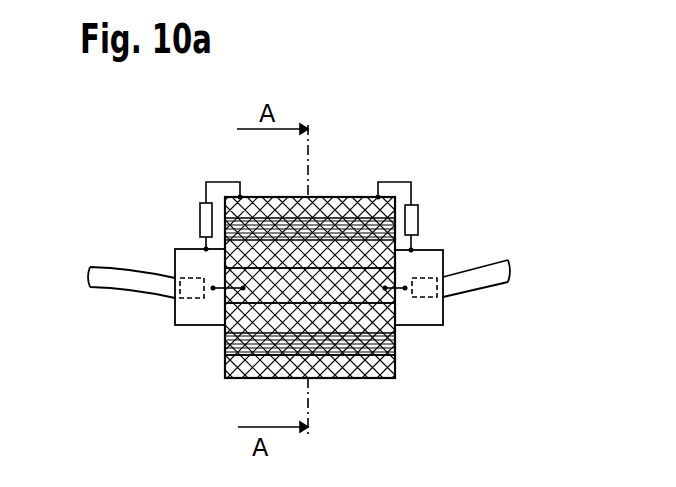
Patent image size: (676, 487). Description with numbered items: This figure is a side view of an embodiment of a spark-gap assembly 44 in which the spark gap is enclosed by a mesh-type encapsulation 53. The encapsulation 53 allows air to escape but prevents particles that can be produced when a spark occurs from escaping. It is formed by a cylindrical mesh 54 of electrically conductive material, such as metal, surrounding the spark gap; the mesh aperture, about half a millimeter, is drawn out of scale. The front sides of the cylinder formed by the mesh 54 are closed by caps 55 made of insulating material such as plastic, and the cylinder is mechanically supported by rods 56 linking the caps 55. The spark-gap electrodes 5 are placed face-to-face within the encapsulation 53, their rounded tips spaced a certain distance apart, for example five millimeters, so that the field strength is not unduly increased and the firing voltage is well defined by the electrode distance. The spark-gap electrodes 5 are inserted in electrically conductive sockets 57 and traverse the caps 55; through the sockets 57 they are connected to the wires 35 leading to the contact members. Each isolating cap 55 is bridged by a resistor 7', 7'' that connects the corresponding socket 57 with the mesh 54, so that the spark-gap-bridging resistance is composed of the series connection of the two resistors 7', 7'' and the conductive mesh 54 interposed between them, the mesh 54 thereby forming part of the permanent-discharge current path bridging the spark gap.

The spark-gap assembly 44 is at (464, 153).
The cylindrical mesh 54 is at (323, 197).
The rods 56 is at (223, 345).
The caps 55 is at (395, 358).
The encapsulation 53 is at (375, 388).
The spark-gap electrodes 5 is at (330, 268).
The resistor 7' is at (196, 206).
The resistor 7'' is at (430, 212).
The sockets 57 is at (178, 262).
The wires 35 is at (127, 280).